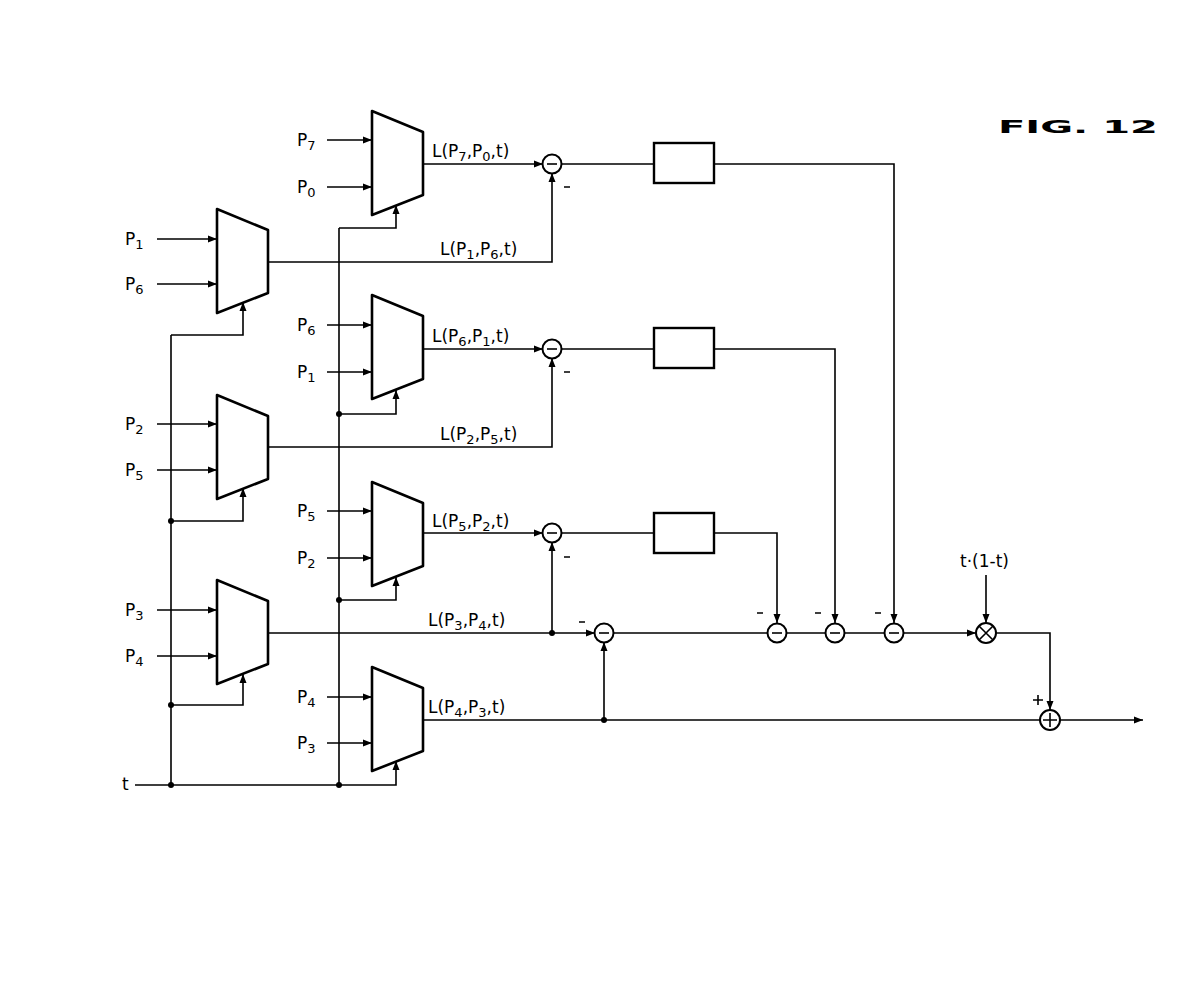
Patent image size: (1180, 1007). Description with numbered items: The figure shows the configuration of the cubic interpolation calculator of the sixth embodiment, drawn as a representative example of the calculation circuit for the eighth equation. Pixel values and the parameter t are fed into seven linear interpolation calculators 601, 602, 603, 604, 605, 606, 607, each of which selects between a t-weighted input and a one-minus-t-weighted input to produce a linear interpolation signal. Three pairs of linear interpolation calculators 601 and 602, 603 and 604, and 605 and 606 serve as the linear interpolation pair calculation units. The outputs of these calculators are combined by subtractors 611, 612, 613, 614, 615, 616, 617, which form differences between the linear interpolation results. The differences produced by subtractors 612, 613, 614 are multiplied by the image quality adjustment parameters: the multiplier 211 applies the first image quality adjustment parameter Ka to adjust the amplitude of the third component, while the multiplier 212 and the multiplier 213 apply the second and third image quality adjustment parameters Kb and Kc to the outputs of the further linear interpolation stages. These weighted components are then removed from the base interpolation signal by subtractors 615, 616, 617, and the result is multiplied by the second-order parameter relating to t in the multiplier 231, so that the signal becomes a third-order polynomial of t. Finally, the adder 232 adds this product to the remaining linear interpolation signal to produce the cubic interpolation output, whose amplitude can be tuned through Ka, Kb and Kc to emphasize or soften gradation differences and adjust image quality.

The linear interpolation calculator 601 is at (411, 678).
The linear interpolation calculator 602 is at (253, 594).
The linear interpolation calculator 603 is at (411, 489).
The linear interpolation calculator 604 is at (253, 410).
The linear interpolation calculator 605 is at (411, 308).
The linear interpolation calculator 606 is at (253, 224).
The linear interpolation calculator 607 is at (411, 125).
The subtractor 611 is at (610, 625).
The subtractor 612 is at (558, 526).
The subtractor 613 is at (558, 341).
The subtractor 614 is at (558, 156).
The subtractor 615 is at (777, 643).
The subtractor 616 is at (835, 643).
The subtractor 617 is at (894, 643).
The multiplier 211 is at (700, 513).
The multiplier 212 is at (700, 328).
The multiplier 213 is at (700, 143).
The multiplier 231 is at (993, 625).
The adder 232 is at (1057, 712).